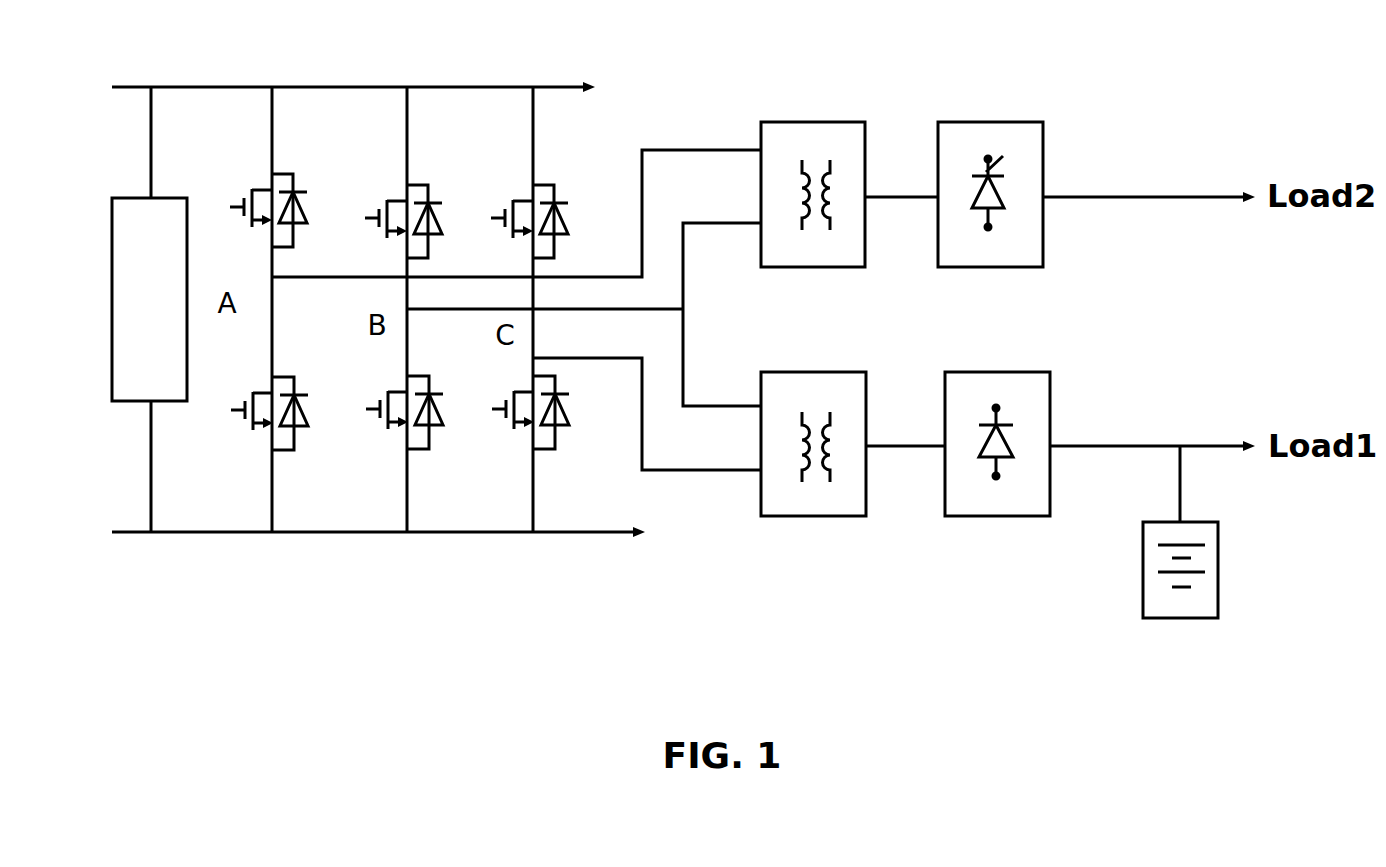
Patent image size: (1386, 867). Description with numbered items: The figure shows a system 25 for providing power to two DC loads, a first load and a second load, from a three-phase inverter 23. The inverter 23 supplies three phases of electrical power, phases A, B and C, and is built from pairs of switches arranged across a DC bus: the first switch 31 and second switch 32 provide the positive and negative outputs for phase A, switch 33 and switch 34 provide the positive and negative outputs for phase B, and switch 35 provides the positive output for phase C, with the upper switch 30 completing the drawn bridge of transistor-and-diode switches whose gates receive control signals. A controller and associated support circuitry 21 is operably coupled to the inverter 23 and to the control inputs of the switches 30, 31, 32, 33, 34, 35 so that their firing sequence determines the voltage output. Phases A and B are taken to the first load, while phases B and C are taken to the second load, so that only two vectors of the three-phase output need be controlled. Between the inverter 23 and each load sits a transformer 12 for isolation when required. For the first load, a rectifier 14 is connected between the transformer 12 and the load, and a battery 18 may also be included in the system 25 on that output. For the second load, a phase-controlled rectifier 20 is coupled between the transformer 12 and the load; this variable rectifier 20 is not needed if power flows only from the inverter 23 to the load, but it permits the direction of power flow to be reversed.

The transformer 12 is at (818, 121).
The rectifier 14 is at (1006, 517).
The battery 18 is at (1188, 619).
The phase-controlled rectifier 20 is at (997, 121).
The controller and associated support circuitry 21 is at (167, 402).
The three-phase inverter 23 is at (380, 86).
The system 25 is at (771, 67).
The switch 30 is at (254, 190).
The first switch 31 is at (254, 392).
The second switch 32 is at (388, 201).
The switch 33 is at (381, 392).
The switch 34 is at (515, 201).
The switch 35 is at (507, 392).